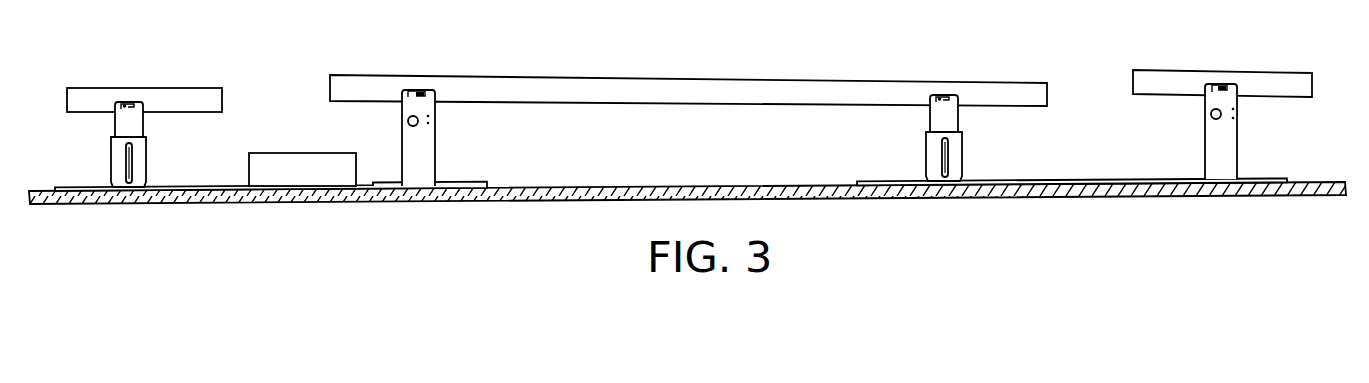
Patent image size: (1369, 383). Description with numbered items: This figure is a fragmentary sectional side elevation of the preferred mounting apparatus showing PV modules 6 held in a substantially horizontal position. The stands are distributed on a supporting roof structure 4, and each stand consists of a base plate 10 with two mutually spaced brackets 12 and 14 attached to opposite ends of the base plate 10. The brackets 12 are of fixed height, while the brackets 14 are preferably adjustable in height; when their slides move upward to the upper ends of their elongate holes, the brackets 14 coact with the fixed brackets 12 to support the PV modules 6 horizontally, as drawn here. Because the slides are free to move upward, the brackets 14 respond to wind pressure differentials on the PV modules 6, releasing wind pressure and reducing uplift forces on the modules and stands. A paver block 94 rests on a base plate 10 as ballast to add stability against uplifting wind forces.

The supporting roof structure 4 is at (237, 203).
The PV module 6 is at (153, 80).
The base plate 10 is at (179, 187).
The bracket 12 is at (443, 155).
The bracket 14 is at (104, 151).
The paver block 94 is at (285, 148).